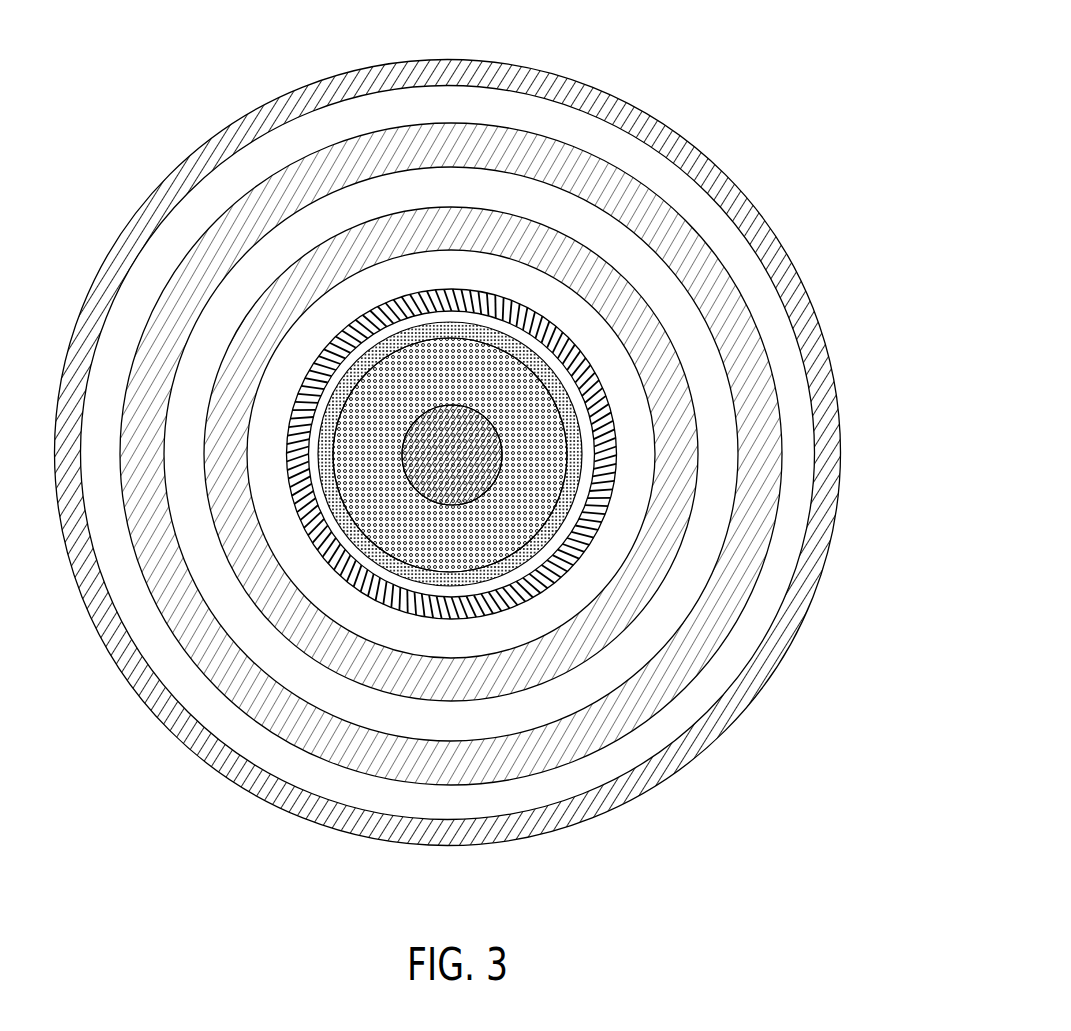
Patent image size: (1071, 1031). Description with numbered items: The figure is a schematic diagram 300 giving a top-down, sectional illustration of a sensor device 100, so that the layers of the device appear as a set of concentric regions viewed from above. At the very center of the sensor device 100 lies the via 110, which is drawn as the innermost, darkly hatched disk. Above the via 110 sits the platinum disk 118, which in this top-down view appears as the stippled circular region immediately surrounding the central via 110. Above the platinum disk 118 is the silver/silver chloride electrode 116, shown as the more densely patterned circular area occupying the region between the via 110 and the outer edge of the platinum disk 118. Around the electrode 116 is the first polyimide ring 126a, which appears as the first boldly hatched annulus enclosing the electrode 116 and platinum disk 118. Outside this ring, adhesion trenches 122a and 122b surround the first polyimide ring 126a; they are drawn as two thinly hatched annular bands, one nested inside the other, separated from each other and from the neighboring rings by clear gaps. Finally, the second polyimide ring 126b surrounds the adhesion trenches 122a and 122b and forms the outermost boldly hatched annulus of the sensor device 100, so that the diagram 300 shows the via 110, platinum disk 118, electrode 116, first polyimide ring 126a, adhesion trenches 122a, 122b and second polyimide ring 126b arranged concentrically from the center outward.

The schematic diagram 300 is at (475, 452).
The sensor device 100 is at (475, 478).
The via 110 is at (437, 446).
The silver/silver chloride electrode 116 is at (554, 537).
The platinum disk 118 is at (382, 539).
The adhesion trench 122a is at (600, 274).
The adhesion trench 122b is at (586, 176).
The first polyimide ring 126a is at (616, 412).
The second polyimide ring 126b is at (762, 233).